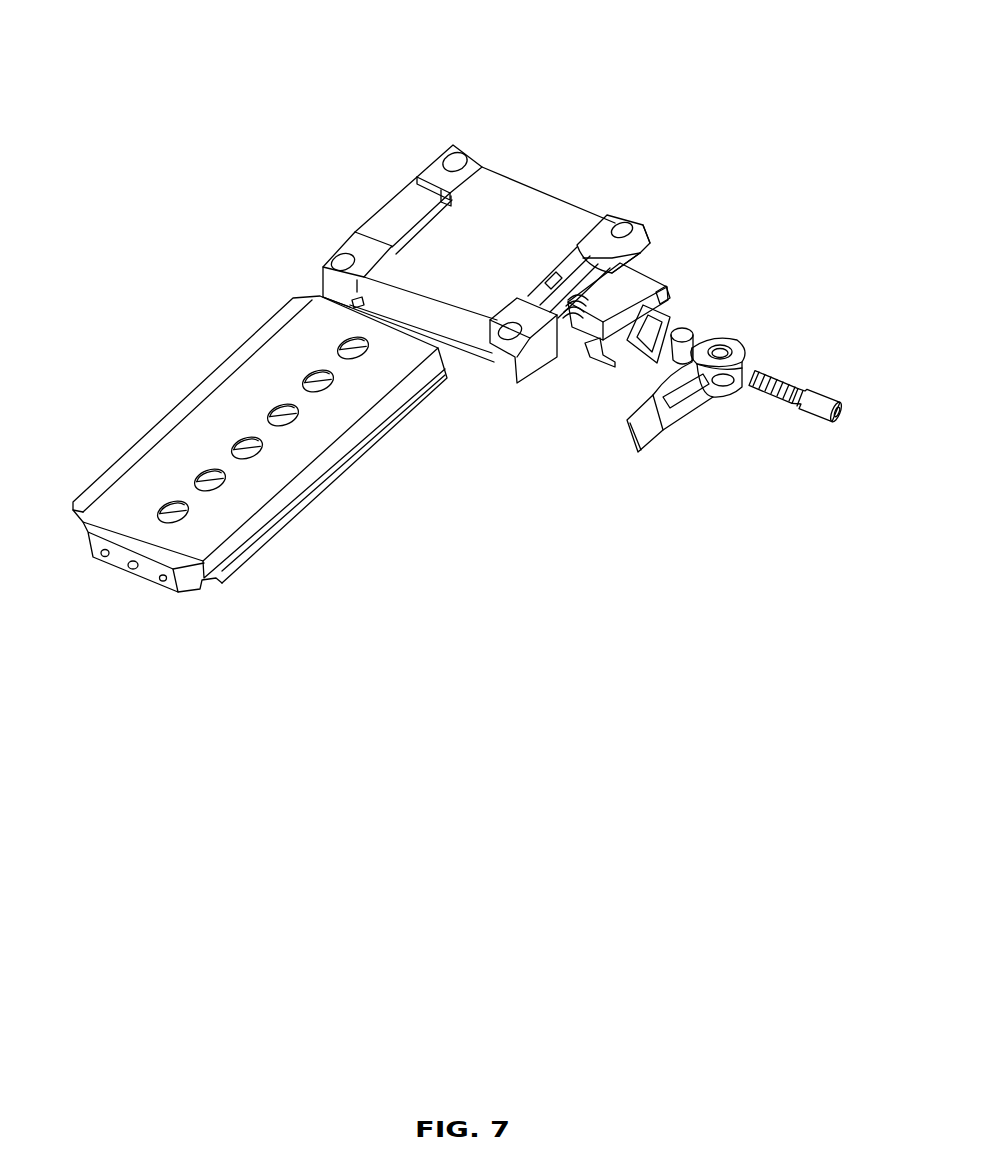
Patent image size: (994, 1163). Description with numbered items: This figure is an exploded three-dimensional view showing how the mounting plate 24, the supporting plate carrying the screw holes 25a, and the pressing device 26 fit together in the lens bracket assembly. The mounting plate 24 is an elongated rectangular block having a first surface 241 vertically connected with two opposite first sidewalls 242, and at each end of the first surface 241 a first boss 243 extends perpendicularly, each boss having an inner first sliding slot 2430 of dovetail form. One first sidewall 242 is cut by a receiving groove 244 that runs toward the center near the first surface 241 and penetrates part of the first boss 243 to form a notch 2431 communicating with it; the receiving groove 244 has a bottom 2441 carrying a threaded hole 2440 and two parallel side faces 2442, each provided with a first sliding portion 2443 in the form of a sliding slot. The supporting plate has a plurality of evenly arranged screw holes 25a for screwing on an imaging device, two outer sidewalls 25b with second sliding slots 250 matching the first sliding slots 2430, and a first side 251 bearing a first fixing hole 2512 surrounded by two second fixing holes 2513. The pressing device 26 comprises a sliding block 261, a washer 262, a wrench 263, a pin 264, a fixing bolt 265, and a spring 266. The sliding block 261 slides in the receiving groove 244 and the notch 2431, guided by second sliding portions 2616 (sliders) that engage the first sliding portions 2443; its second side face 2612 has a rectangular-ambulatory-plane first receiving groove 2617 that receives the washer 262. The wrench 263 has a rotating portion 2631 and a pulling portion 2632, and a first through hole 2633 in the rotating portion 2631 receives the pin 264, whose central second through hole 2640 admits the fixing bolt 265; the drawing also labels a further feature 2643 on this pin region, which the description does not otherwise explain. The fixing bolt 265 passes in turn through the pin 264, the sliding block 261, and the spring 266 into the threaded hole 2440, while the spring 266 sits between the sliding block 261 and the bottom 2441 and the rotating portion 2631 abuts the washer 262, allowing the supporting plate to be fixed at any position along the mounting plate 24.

The mounting plate 24 is at (518, 120).
The first surface 241 is at (538, 213).
The first sidewalls 242 is at (530, 358).
The first boss 243 is at (603, 233).
The receiving groove 244 is at (568, 302).
The first sliding slot 2430 is at (363, 275).
The notch 2431 is at (535, 288).
The threaded hole 2440 is at (647, 240).
The bottom 2441 is at (650, 248).
The side faces 2442 is at (585, 268).
The first sliding portion 2443 is at (553, 305).
The screw holes 25a is at (207, 470).
The outer sidewalls 25b is at (258, 537).
The second sliding slots 250 is at (216, 584).
The first side 251 is at (122, 562).
The first fixing hole 2512 is at (135, 569).
The second fixing holes 2513 is at (281, 373).
The pressing device 26 is at (716, 508).
The sliding block 261 is at (643, 287).
The second side face 2612 is at (600, 352).
The second sliding portions 2616 is at (580, 340).
The first receiving groove 2617 is at (682, 303).
The washer 262 is at (671, 320).
The wrench 263 is at (630, 470).
The rotating portion 2631 is at (742, 348).
The pulling portion 2632 is at (652, 434).
The first through hole 2633 is at (724, 383).
The pin 264 is at (695, 380).
The second through hole 2640 is at (705, 344).
The threaded shank 2643 is at (757, 380).
The fixing bolt 265 is at (812, 412).
The spring 266 is at (630, 262).